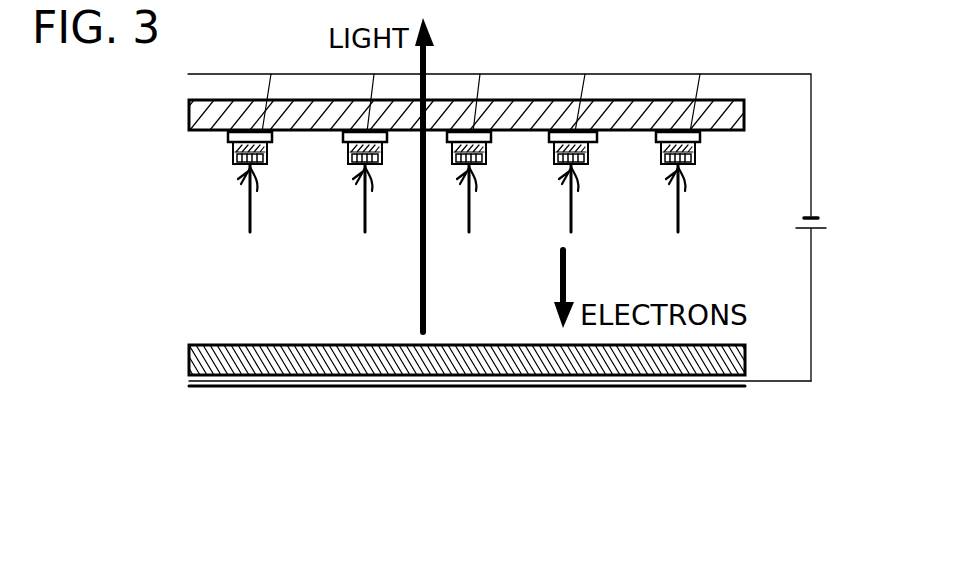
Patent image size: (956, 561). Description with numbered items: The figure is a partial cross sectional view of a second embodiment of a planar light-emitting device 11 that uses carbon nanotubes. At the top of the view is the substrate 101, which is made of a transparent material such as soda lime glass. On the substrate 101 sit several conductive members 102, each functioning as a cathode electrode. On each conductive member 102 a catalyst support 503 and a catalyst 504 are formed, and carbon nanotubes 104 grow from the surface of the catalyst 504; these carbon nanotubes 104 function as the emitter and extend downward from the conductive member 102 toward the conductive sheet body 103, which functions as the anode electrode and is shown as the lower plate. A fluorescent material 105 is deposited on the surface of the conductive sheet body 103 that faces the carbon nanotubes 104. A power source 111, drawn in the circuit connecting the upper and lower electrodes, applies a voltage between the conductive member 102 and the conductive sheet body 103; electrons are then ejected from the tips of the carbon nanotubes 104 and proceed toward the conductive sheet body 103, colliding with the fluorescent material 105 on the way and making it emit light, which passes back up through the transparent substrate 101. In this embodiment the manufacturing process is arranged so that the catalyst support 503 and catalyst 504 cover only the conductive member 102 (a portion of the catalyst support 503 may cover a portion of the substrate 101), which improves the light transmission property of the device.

The planar light-emitting device 11 is at (632, 58).
The substrate 101 is at (505, 110).
The conductive member 102 is at (565, 208).
The conductive sheet body 103 is at (410, 380).
The carbon nanotubes 104 is at (525, 224).
The fluorescent material 105 is at (487, 367).
The power source 111 is at (803, 233).
The catalyst support 503 is at (590, 150).
The catalyst 504 is at (547, 163).